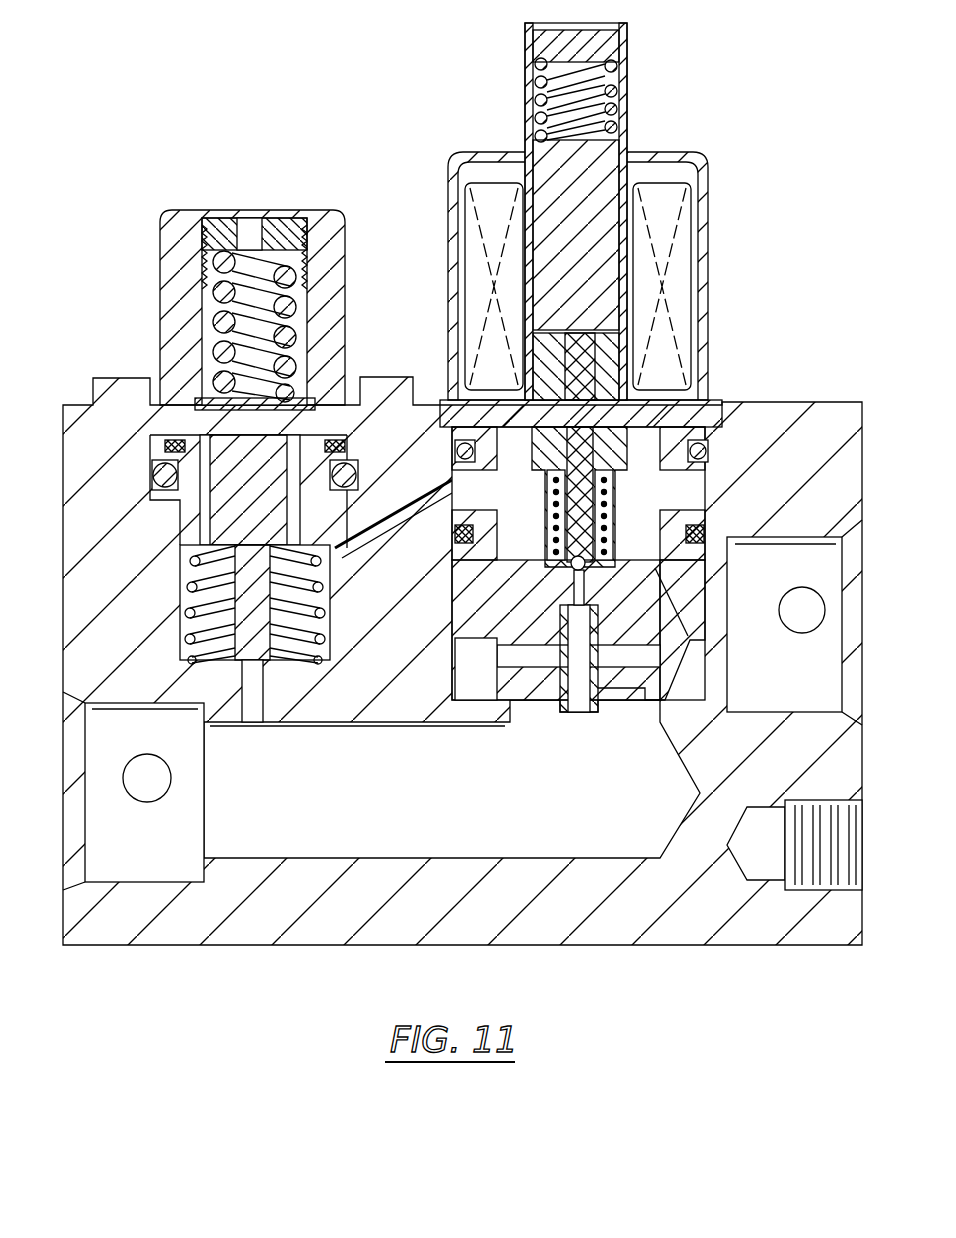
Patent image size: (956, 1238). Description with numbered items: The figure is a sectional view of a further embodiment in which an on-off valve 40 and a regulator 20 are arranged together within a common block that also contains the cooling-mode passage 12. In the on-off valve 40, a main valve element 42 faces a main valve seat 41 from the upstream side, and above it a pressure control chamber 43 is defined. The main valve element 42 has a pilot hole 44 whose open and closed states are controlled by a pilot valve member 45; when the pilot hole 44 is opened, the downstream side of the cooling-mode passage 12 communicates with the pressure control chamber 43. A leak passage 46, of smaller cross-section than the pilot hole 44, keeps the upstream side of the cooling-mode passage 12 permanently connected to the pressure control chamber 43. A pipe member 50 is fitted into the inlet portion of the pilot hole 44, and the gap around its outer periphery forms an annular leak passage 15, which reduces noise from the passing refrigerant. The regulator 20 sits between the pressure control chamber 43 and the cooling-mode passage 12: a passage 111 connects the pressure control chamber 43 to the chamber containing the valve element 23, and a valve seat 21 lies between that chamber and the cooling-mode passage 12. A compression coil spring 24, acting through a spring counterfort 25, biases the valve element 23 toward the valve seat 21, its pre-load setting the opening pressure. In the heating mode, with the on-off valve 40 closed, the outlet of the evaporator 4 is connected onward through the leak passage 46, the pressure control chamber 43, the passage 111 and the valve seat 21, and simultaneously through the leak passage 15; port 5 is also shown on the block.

The regulator 20 is at (219, 456).
The compression coil spring 24 is at (215, 285).
The spring counterfort 25 is at (200, 405).
The valve seat 21 is at (263, 660).
The valve element 23 is at (256, 662).
The passage 111 is at (404, 530).
The on-off valve 40 is at (606, 408).
The pressure control chamber 43 is at (660, 445).
The pilot valve member 45 is at (584, 560).
The pilot hole 44 is at (575, 592).
The leak passage 46 is at (690, 640).
The main valve seat 41 is at (503, 712).
The main valve element 42 is at (537, 683).
The pipe member 50 is at (560, 705).
The leak passage 15 is at (603, 676).
The cooling-mode passage 12 is at (424, 838).
The evaporator 4 is at (794, 622).
The port 5 is at (133, 791).